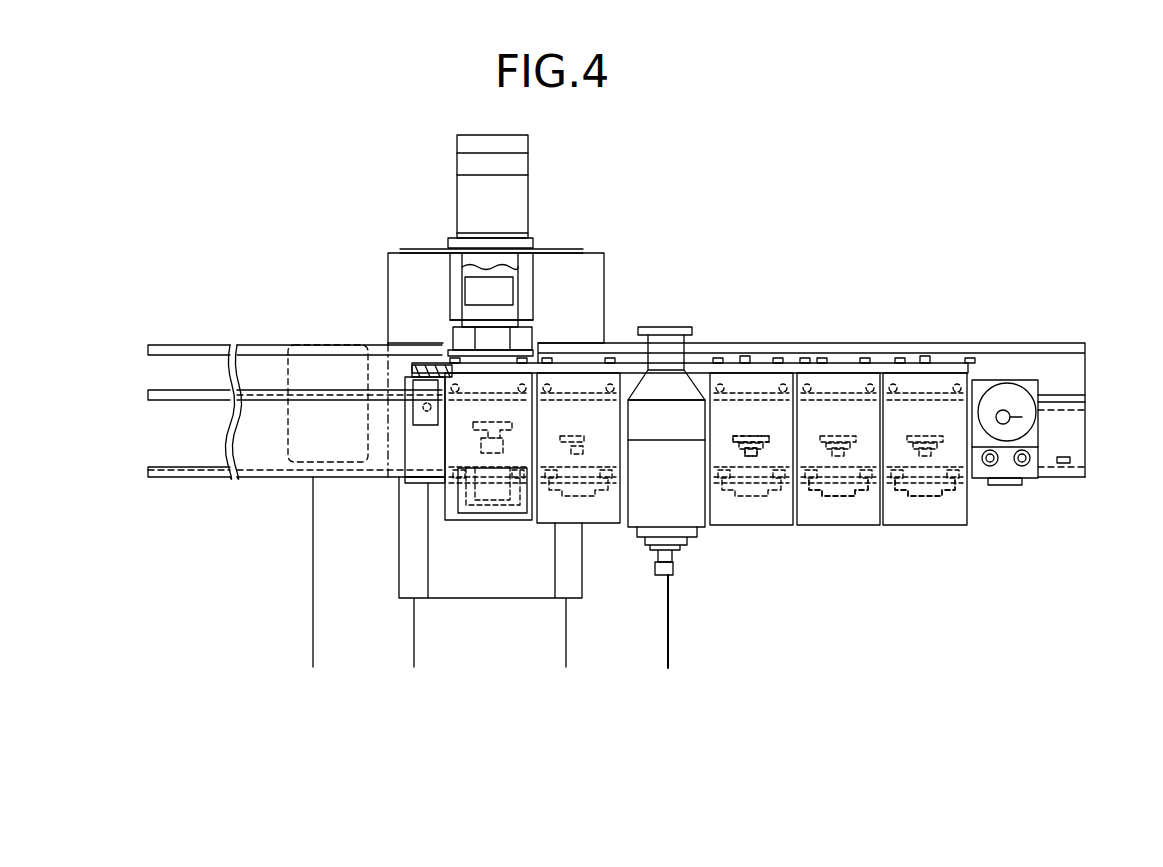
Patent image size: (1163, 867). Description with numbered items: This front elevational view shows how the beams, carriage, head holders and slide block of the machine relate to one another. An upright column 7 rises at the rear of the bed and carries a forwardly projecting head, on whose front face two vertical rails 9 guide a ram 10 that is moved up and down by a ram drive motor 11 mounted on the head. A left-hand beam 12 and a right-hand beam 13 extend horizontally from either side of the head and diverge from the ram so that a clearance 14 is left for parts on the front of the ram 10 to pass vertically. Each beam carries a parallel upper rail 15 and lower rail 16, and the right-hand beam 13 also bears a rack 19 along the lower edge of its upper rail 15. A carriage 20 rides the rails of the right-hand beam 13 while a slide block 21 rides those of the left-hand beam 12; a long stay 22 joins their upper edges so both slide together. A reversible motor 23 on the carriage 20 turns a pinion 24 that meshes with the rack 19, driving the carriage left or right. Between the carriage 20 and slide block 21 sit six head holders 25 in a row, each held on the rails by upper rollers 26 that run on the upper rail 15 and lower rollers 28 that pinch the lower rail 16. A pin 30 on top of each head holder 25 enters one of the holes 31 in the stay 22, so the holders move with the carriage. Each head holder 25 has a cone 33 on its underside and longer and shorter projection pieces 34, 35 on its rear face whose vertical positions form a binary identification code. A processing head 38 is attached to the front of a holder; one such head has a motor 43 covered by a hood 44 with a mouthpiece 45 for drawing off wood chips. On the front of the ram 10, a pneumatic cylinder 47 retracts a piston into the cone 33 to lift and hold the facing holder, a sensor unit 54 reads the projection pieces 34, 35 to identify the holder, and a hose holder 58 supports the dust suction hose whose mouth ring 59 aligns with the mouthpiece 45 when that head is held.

The upright column 7 is at (313, 558).
The vertical rails 9 is at (413, 582).
The ram 10 is at (580, 285).
The ram drive motor 11 is at (510, 192).
The left-hand beam 12 is at (252, 348).
The right-hand beam 13 is at (858, 348).
The clearance 14 is at (452, 440).
The upper rail 15 is at (150, 398).
The lower rail 16 is at (150, 471).
The rack 19 is at (1072, 412).
The carriage 20 is at (1040, 455).
The slide block 21 is at (405, 420).
The stay 22 is at (822, 370).
The reversible motor 23 is at (1007, 428).
The pinion 24 is at (1043, 428).
The head holders 25 is at (452, 522).
The rollers 26 is at (900, 370).
The rollers 28 is at (840, 502).
The pin 30 is at (745, 370).
The holes 31 is at (717, 370).
The cone 33 is at (935, 495).
The longer projection piece 34 is at (755, 452).
The shorter projection piece 35 is at (772, 448).
The processing head 38 is at (683, 533).
The motor 43 is at (672, 552).
The hood 44 is at (637, 368).
The mouthpiece 45 is at (668, 327).
The pneumatic cylinder 47 is at (490, 522).
The sensor unit 54 is at (422, 377).
The hose holder 58 is at (470, 318).
The mouth ring 59 is at (488, 288).